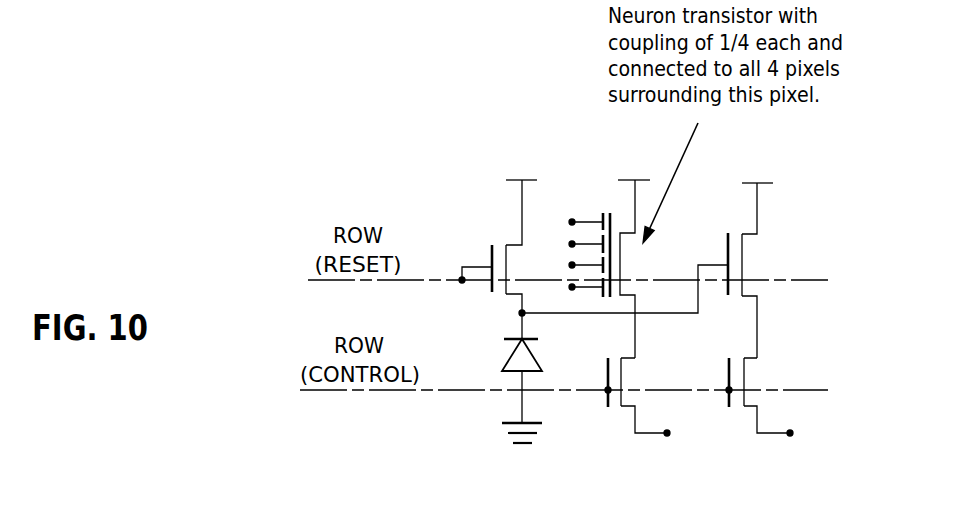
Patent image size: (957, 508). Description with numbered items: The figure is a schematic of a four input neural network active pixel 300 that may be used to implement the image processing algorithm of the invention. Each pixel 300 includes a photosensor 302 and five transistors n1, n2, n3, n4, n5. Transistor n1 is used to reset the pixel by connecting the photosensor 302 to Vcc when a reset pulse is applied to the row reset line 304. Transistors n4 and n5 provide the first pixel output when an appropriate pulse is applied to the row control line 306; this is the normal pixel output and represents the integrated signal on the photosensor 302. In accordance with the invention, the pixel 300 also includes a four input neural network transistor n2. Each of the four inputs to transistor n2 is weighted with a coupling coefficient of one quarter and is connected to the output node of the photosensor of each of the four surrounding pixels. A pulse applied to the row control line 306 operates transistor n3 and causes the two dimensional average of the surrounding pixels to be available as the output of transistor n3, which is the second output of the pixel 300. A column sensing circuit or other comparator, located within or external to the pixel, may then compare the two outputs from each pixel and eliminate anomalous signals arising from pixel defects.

The neural network active pixel 300 is at (444, 447).
The photosensor 302 is at (505, 361).
The row reset line 304 is at (308, 280).
The row control line 306 is at (300, 390).
The transistor n1 is at (499, 240).
The four input neural network transistor n2 is at (612, 250).
The transistor n3 is at (632, 399).
The transistor n4 is at (649, 249).
The transistor n5 is at (755, 399).